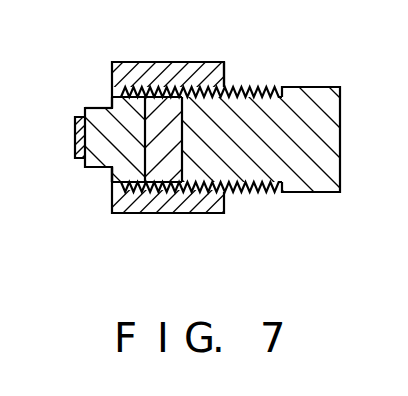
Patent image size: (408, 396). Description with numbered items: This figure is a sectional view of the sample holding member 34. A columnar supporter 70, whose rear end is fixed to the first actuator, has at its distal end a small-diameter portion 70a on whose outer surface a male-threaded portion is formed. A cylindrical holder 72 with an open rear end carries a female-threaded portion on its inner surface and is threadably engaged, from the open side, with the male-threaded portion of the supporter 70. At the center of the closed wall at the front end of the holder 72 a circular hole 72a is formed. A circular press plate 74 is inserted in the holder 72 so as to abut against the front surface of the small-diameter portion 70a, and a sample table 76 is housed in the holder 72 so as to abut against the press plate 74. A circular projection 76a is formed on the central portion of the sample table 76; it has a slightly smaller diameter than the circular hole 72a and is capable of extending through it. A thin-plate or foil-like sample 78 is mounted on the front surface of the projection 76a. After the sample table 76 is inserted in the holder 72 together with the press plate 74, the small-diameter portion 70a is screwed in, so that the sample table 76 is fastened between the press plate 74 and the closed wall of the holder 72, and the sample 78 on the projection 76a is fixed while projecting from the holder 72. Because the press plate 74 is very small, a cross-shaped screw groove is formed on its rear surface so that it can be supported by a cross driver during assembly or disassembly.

The sample holding member 34 is at (225, 62).
The columnar supporter 70 is at (306, 192).
The small-diameter portion 70a is at (242, 193).
The cylindrical holder 72 is at (168, 62).
The circular hole 72a is at (113, 165).
The circular press plate 74 is at (167, 173).
The sample table 76 is at (103, 108).
The circular projection 76a is at (90, 110).
The sample 78 is at (78, 140).